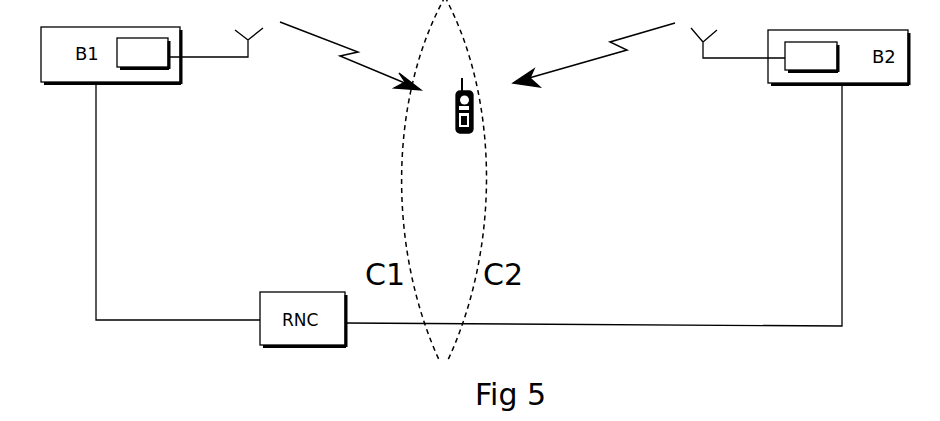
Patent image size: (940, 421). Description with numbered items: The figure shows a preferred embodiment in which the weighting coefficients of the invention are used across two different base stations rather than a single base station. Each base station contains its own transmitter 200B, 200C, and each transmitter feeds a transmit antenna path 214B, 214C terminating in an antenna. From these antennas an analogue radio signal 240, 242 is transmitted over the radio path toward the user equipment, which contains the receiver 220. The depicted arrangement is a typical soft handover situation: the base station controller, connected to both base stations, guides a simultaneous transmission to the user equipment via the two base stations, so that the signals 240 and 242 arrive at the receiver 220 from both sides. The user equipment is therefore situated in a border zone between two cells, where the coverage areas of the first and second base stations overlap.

The transmitter 200B is at (143, 53).
The transmitter 200C is at (811, 57).
The transmit antenna path 214B is at (237, 58).
The transmit antenna path 214C is at (758, 59).
The analogue radio signal 240 is at (350, 63).
The analogue radio signal 242 is at (620, 55).
The receiver 220 is at (466, 133).